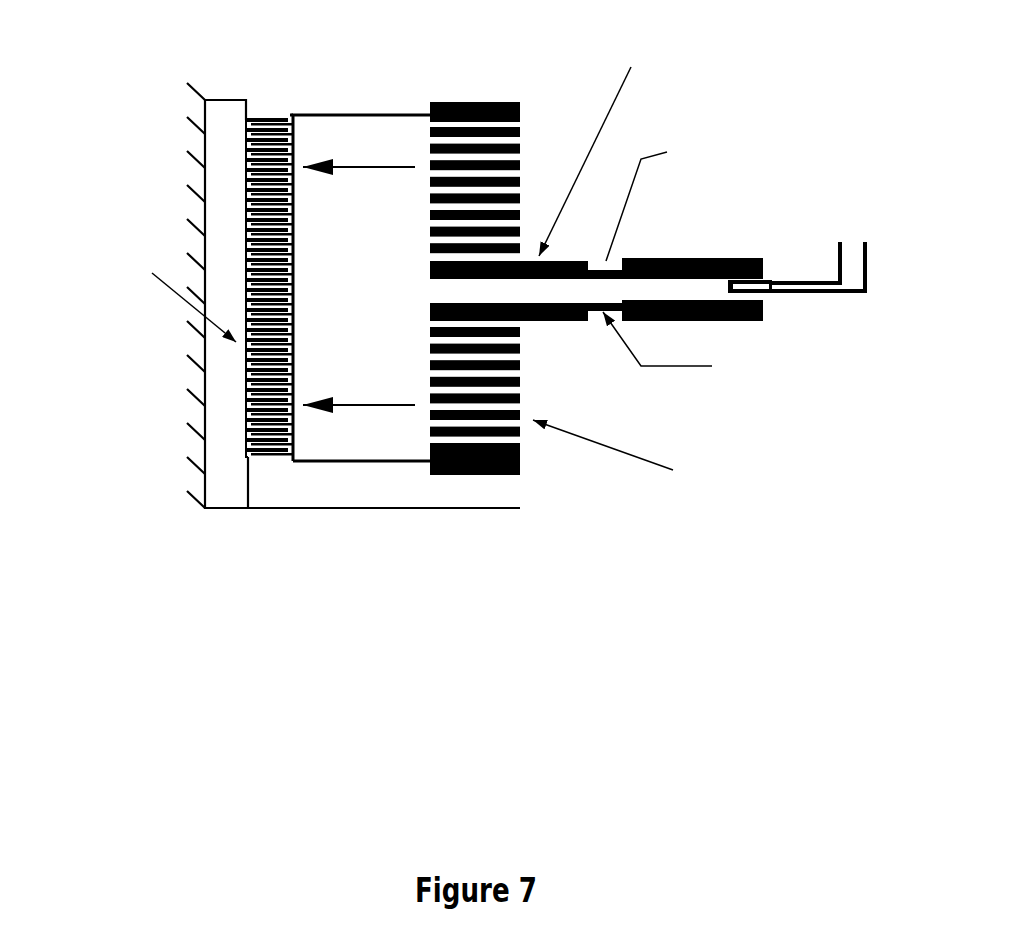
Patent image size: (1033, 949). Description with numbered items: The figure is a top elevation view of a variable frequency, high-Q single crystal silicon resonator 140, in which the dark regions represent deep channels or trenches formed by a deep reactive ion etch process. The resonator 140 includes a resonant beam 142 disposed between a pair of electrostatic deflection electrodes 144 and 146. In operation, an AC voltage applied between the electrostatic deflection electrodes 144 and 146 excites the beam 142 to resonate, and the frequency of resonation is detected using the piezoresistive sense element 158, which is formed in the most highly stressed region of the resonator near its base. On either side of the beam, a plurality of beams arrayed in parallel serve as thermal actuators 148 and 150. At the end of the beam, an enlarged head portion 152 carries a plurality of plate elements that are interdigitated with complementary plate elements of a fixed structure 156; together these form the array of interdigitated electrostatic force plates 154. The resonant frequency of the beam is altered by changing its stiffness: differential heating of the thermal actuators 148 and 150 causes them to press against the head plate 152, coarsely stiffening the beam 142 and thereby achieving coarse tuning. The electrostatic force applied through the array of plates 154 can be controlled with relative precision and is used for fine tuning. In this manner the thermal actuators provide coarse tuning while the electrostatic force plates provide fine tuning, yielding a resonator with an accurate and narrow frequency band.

The resonator 140 is at (374, 82).
The resonant beam 142 is at (556, 325).
The electrostatic deflection electrode 144 is at (591, 257).
The electrostatic deflection electrode 146 is at (606, 314).
The thermal actuator 148 is at (526, 146).
The thermal actuator 150 is at (541, 401).
The enlarged head portion 152 is at (361, 288).
The electrostatic force plates 154 is at (273, 104).
The fixed structure 156 is at (227, 510).
The piezoresistive sense element 158 is at (727, 287).